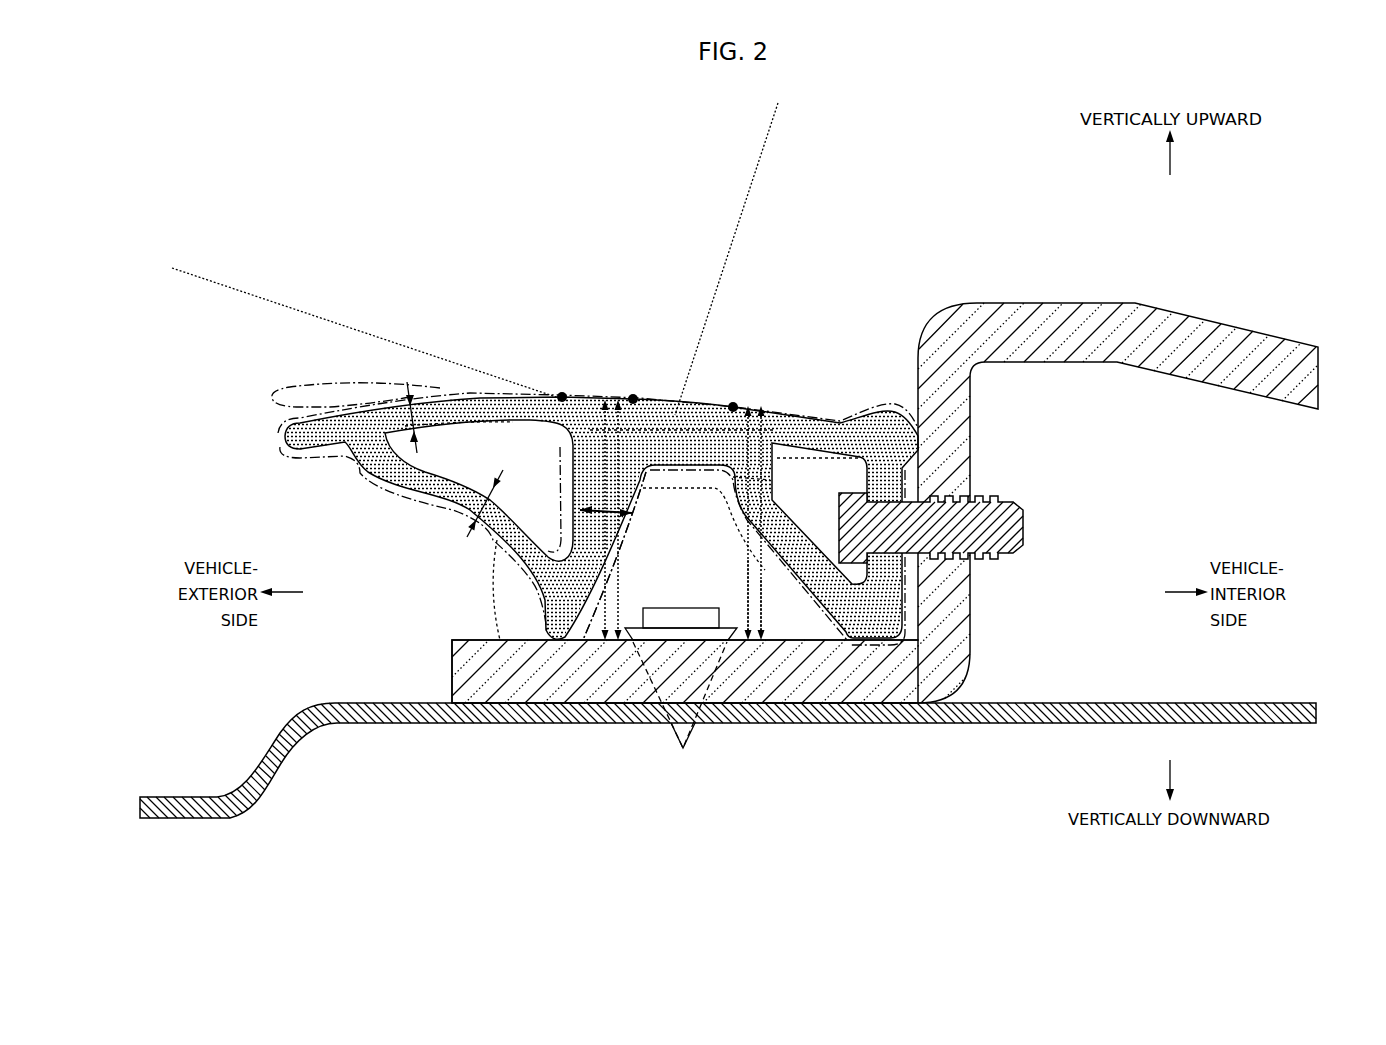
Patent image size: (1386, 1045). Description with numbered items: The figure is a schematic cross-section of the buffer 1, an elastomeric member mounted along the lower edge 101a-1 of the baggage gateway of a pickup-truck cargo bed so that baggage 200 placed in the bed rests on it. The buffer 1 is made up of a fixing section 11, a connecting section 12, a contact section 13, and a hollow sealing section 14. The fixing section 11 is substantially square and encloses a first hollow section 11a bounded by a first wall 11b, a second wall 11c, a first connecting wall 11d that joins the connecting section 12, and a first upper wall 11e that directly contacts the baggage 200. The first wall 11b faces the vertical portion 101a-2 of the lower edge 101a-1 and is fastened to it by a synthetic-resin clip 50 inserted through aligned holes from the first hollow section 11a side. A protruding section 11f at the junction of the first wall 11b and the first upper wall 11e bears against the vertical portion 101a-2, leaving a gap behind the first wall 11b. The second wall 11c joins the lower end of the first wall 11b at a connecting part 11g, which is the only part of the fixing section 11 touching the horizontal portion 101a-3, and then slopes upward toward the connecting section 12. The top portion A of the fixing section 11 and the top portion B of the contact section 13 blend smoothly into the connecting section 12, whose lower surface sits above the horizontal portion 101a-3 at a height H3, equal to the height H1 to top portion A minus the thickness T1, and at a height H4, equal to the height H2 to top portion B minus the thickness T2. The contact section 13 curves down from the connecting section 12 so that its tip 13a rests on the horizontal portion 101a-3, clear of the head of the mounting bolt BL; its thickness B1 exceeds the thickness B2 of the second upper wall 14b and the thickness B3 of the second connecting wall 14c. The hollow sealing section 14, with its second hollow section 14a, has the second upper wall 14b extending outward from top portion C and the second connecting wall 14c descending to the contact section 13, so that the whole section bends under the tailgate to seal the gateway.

The buffer 1 is at (792, 336).
The fixing section 11 is at (823, 414).
The first hollow section 11a is at (837, 475).
The first wall 11b is at (885, 482).
The second wall 11c is at (783, 543).
The first connecting wall 11d is at (718, 460).
The first upper wall 11e is at (838, 428).
The protruding section 11f is at (897, 432).
The connecting part 11g is at (877, 612).
The connecting section 12 is at (660, 392).
The contact section 13 is at (598, 392).
The tip of the contact section 13a is at (563, 622).
The hollow sealing section 14 is at (292, 449).
The second hollow section 14a is at (462, 443).
The second upper wall 14b is at (460, 410).
The second connecting wall 14c is at (452, 494).
The clip 50 is at (1010, 525).
The lower edge 101a-1 is at (1050, 778).
The vertical portion 101a-2 is at (958, 603).
The horizontal portion 101a-3 is at (792, 675).
The baggage 200 is at (757, 178).
The top portion A is at (735, 402).
The top portion B is at (633, 394).
The top portion C is at (562, 392).
The thickness T1 is at (765, 437).
The thickness T2 is at (600, 438).
The thickness B1 is at (600, 478).
The thickness B2 is at (398, 392).
The thickness B3 is at (483, 497).
The height H1 is at (748, 568).
The height H2 is at (630, 543).
The height H3 is at (764, 590).
The height H4 is at (578, 512).
The bolt BL is at (682, 617).